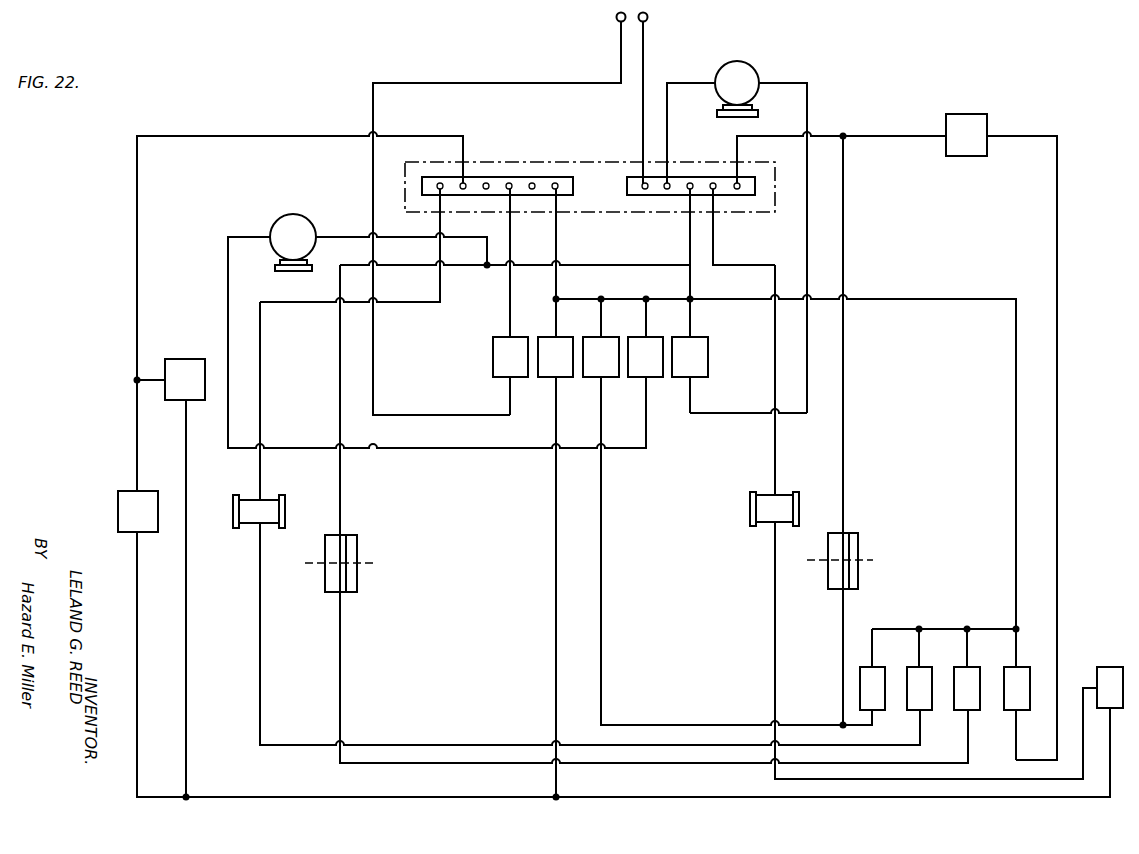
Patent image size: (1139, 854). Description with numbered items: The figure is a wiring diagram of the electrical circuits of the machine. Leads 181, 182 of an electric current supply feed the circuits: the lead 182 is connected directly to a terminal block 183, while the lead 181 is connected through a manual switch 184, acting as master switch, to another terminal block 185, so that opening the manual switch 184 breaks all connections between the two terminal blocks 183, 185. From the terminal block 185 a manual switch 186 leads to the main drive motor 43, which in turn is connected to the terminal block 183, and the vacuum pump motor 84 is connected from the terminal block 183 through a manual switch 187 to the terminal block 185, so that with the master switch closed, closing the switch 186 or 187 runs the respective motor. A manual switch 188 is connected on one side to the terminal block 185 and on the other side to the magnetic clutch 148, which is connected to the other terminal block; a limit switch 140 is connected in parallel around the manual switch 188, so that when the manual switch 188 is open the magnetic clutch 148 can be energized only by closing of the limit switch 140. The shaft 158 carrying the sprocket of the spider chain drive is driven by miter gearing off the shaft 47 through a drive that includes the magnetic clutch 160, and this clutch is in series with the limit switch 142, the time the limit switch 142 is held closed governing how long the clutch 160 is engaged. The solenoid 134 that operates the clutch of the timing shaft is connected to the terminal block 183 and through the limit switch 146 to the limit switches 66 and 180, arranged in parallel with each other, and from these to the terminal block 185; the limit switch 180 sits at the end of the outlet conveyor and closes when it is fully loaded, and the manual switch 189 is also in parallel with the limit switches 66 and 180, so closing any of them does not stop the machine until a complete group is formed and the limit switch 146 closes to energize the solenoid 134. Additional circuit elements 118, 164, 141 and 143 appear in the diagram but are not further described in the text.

The lead 181 is at (620, 42).
The lead 182 is at (644, 28).
The vacuum pump motor 84 is at (745, 73).
The switch 118 is at (967, 120).
The terminal block 185 is at (520, 182).
The terminal block 183 is at (750, 188).
The main drive motor 43 is at (293, 220).
The limit switch 66 is at (186, 365).
The limit switch 180 is at (133, 500).
The relay coil 164 is at (267, 503).
The magnetic clutch 160 is at (352, 544).
The shaft 158 is at (370, 565).
The manual switch 184 is at (502, 360).
The manual switch 189 is at (555, 363).
The manual switch 188 is at (603, 363).
The manual switch 186 is at (650, 363).
The manual switch 187 is at (693, 353).
The solenoid 134 is at (770, 498).
The magnetic clutch 148 is at (857, 543).
The shaft 47 is at (822, 563).
The limit switch 140 is at (873, 673).
The solenoid 141 is at (923, 673).
The limit switch 142 is at (969, 673).
The solenoid 143 is at (1020, 673).
The limit switch 146 is at (1108, 673).